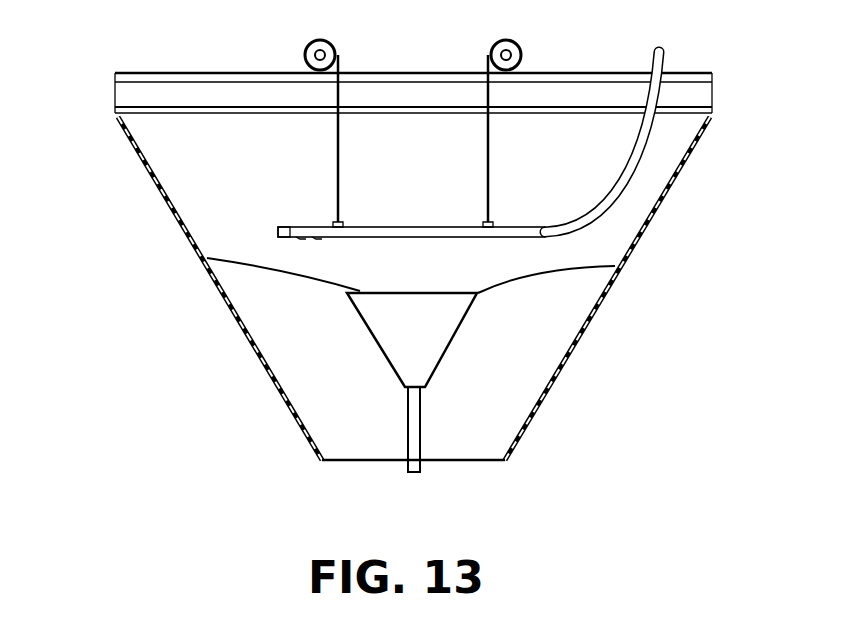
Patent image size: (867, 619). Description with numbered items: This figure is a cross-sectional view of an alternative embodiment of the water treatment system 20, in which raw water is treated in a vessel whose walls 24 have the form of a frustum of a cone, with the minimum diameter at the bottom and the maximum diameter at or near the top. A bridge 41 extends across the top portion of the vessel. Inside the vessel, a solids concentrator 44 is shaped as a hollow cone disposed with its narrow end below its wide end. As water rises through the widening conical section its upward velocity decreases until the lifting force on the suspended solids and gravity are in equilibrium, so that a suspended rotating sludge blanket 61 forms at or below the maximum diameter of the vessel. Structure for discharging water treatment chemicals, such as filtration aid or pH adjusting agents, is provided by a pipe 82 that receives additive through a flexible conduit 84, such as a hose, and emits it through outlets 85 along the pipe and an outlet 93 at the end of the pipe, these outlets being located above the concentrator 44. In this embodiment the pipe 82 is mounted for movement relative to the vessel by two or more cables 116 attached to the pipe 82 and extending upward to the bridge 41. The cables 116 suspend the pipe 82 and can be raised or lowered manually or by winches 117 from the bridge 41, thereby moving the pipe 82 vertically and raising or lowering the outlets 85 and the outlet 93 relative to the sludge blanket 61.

The water treatment system 20 is at (393, 288).
The walls 24 is at (632, 250).
The bridge 41 is at (190, 73).
The solids concentrator 44 is at (440, 360).
The rotating sludge blanket 61 is at (282, 268).
The pipe 82 is at (417, 237).
The flexible conduit 84 is at (627, 153).
The outlets 85 is at (297, 238).
The outlet 93 is at (278, 230).
The cables 116 is at (338, 155).
The winches 117 is at (306, 52).